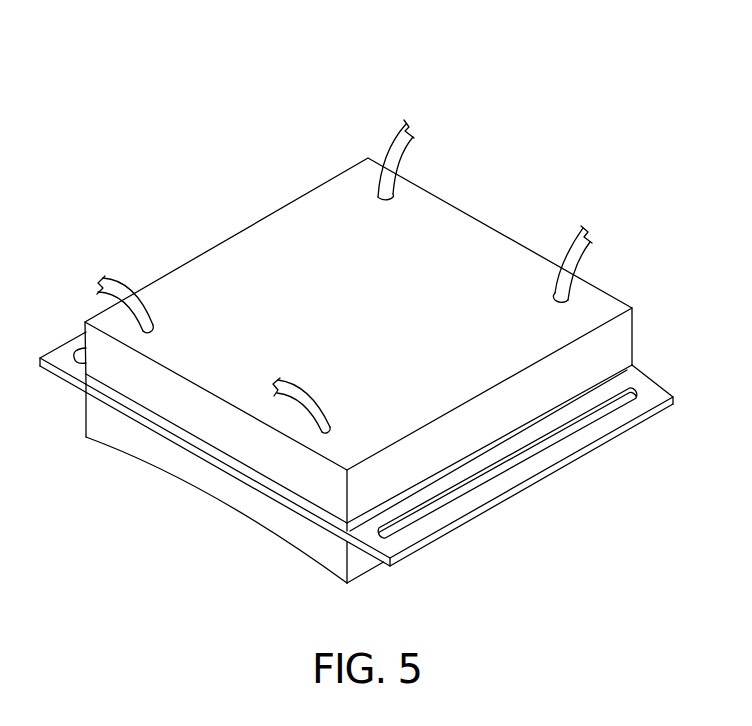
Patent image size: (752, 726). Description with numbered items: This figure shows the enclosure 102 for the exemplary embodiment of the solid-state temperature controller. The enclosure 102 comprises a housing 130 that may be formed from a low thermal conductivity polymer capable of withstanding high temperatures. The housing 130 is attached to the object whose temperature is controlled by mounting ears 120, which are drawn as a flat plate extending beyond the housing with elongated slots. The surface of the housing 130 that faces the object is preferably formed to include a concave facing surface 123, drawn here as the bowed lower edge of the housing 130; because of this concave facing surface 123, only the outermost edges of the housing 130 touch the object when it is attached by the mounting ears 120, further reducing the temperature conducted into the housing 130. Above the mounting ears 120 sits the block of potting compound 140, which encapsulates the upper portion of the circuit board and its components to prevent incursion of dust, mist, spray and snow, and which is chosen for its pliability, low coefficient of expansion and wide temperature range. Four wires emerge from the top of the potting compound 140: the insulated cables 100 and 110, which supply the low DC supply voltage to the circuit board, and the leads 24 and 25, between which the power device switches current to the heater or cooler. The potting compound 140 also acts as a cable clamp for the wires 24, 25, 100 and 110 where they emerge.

The enclosure 102 is at (539, 136).
The potting compound 140 is at (256, 243).
The mounting ears 120 is at (677, 398).
The housing 130 is at (76, 418).
The concave facing surface 123 is at (203, 490).
The insulated cable 100 is at (388, 132).
The insulated cable 110 is at (568, 233).
The lead 24 is at (116, 278).
The lead 25 is at (306, 388).